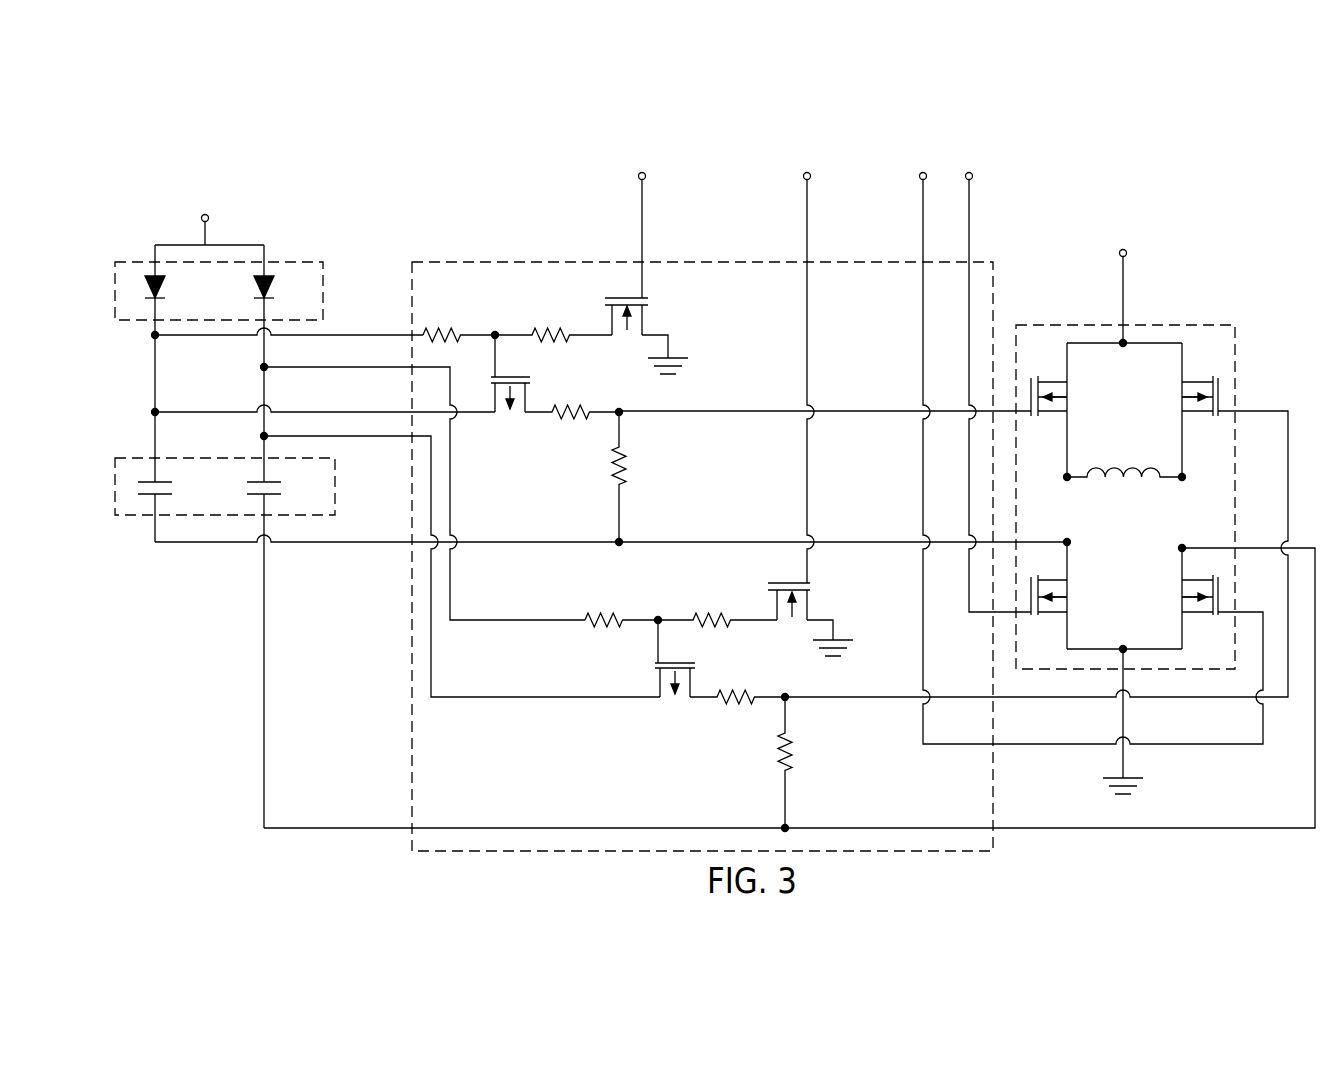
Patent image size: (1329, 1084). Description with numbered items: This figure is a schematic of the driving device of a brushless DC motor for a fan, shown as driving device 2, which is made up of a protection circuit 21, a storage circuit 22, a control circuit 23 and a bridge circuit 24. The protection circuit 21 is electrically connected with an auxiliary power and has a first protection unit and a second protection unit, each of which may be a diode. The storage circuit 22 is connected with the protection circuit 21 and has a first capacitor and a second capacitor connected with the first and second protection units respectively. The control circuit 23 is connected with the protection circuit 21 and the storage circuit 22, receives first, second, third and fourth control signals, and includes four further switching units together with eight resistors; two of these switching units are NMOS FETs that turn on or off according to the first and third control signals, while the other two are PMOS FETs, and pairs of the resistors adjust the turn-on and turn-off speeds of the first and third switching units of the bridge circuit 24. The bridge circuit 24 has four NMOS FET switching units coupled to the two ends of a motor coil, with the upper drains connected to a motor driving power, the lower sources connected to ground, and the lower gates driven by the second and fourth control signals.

The driving device 2 is at (228, 166).
The protection circuit 21 is at (323, 278).
The storage circuit 22 is at (335, 503).
The control circuit 23 is at (993, 303).
The bridge circuit 24 is at (1235, 337).